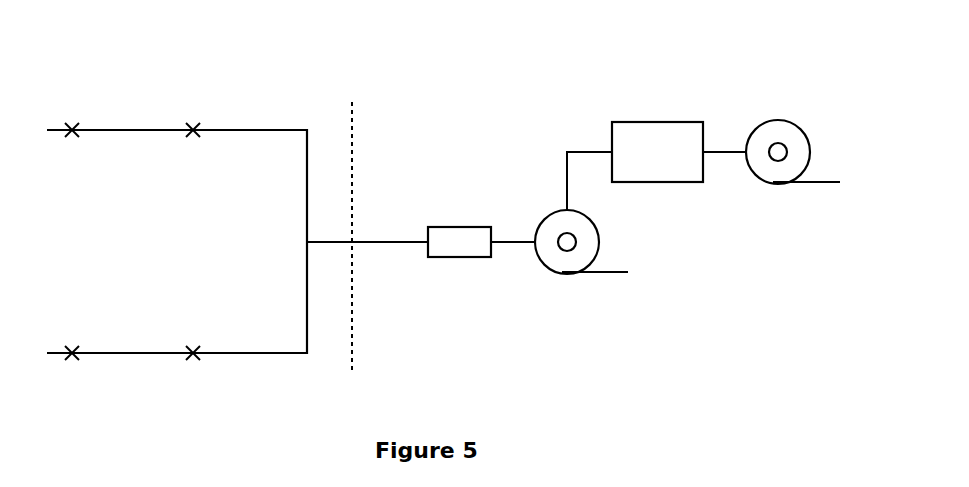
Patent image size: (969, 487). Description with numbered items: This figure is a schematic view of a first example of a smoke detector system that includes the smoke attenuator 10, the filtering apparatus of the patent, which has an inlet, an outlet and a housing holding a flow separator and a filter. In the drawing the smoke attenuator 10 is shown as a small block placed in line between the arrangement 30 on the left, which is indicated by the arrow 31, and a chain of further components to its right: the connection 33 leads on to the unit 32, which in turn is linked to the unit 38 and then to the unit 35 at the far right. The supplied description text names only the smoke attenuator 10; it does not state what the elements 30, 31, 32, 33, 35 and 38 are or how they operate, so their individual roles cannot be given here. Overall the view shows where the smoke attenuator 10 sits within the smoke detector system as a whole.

The filtering apparatus 10 is at (476, 322).
The borehole heat exchanger loop 30 is at (214, 277).
The ground-side installation 31 is at (307, 76).
The circulation pump 32 is at (543, 210).
The connecting pipe 33 is at (542, 289).
The second pump 35 is at (799, 198).
The heat pump unit 38 is at (675, 199).